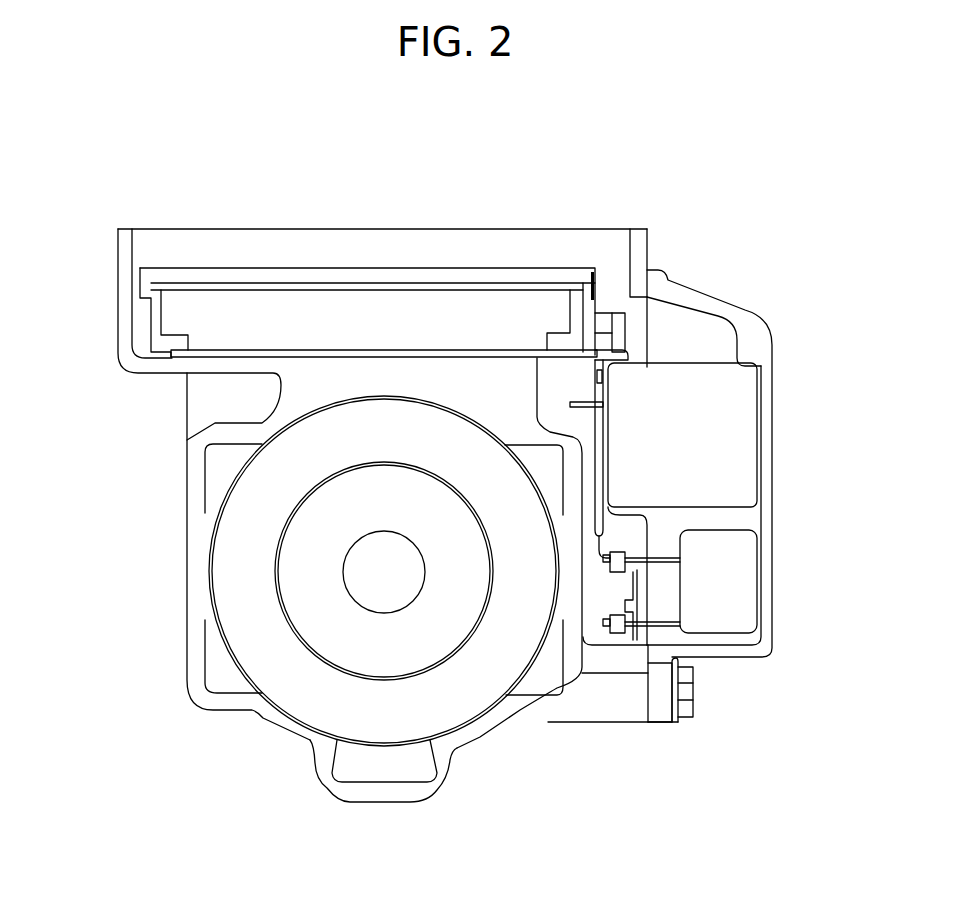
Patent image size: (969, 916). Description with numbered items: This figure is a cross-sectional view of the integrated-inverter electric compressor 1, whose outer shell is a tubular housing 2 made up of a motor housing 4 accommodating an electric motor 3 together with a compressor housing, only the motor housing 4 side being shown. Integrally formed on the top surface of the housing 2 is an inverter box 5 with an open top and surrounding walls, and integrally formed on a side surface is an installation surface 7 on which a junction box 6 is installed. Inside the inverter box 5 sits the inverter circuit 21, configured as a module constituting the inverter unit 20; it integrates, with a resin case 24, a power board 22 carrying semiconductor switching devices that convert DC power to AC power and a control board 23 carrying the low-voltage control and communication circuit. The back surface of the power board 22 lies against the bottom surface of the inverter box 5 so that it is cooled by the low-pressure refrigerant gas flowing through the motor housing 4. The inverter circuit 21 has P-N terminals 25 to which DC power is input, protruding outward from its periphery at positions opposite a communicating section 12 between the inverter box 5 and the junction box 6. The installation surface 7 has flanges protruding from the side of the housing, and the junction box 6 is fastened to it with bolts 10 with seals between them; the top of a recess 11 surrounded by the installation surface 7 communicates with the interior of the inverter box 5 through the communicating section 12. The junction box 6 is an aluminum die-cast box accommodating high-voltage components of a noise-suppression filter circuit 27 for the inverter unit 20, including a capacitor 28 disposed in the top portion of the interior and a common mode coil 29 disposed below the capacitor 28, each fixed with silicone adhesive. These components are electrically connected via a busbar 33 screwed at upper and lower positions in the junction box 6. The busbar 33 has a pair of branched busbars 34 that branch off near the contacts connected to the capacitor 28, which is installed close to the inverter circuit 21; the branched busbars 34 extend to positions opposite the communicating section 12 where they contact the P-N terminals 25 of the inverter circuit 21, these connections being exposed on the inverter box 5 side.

The integrated-inverter electric compressor 1 is at (706, 199).
The tubular housing 2 is at (178, 597).
The electric motor 3 is at (305, 700).
The motor housing 4 is at (465, 735).
The inverter box 5 is at (118, 285).
The junction box 6 is at (757, 325).
The installation surface 7 is at (610, 665).
The bolts 10 is at (695, 690).
The recess 11 is at (617, 590).
The communicating section 12 is at (645, 320).
The inverter unit 20 is at (342, 250).
The inverter circuit 21 is at (208, 272).
The power board 22 is at (387, 352).
The control board 23 is at (445, 288).
The resin case 24 is at (150, 325).
The P-N terminals 25 is at (602, 313).
The noise-suppression filter circuit 27 is at (765, 520).
The capacitor 28 is at (735, 435).
The common mode coil 29 is at (745, 588).
The busbar 33 is at (598, 520).
The branched busbars 34 is at (617, 352).